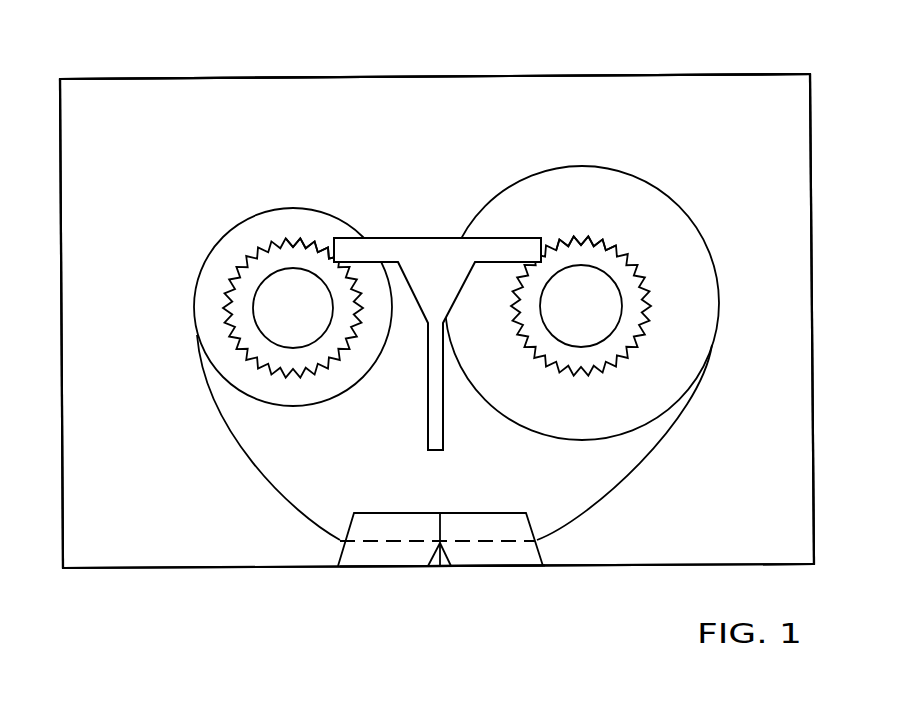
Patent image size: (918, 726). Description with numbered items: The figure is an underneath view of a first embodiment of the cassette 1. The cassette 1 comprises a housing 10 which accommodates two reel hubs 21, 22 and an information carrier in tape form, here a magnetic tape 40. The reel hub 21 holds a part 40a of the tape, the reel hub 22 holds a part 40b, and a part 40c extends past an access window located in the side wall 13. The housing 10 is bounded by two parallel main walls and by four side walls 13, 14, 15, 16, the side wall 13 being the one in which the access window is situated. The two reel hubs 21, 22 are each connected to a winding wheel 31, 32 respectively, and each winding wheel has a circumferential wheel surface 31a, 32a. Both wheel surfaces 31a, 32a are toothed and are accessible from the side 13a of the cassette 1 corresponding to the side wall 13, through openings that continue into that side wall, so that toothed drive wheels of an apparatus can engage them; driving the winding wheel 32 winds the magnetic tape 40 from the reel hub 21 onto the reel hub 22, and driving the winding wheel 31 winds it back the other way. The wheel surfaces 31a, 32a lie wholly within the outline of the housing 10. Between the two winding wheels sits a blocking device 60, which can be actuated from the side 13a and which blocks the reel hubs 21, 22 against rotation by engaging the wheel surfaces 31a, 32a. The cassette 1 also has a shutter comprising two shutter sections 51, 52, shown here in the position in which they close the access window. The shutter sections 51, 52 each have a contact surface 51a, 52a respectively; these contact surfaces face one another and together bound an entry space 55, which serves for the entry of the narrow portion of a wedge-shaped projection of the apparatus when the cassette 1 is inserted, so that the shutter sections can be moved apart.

The cassette 1 is at (174, 56).
The housing 10 is at (58, 78).
The side wall 13 is at (100, 568).
The side 13a is at (440, 648).
The side wall 14 is at (60, 207).
The side wall 15 is at (377, 74).
The side wall 16 is at (812, 227).
The reel hub 21 is at (288, 280).
The reel hub 22 is at (565, 277).
The winding wheel 31 is at (263, 262).
The circumferential wheel surface 31a is at (315, 250).
The winding wheel 32 is at (622, 277).
The circumferential wheel surface 32a is at (590, 240).
The magnetic tape 40 is at (258, 465).
The tape part 40a is at (217, 258).
The tape part 40b is at (650, 225).
The tape part 40c is at (497, 538).
The shutter section 51 is at (360, 556).
The contact surface 51a is at (433, 548).
The shutter section 52 is at (525, 556).
The contact surface 52a is at (448, 548).
The entry space 55 is at (440, 567).
The blocking device 60 is at (430, 208).